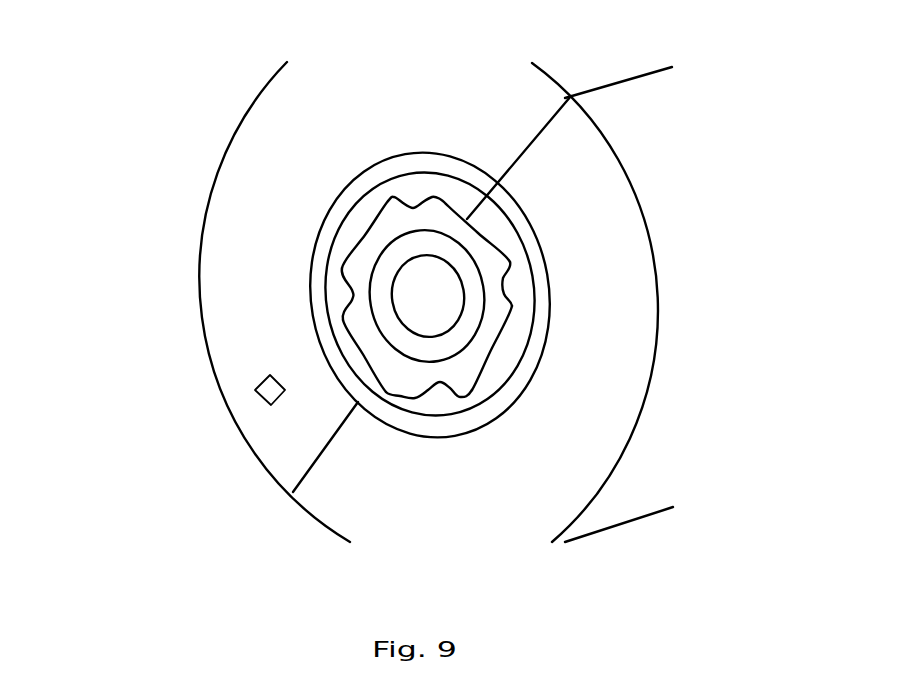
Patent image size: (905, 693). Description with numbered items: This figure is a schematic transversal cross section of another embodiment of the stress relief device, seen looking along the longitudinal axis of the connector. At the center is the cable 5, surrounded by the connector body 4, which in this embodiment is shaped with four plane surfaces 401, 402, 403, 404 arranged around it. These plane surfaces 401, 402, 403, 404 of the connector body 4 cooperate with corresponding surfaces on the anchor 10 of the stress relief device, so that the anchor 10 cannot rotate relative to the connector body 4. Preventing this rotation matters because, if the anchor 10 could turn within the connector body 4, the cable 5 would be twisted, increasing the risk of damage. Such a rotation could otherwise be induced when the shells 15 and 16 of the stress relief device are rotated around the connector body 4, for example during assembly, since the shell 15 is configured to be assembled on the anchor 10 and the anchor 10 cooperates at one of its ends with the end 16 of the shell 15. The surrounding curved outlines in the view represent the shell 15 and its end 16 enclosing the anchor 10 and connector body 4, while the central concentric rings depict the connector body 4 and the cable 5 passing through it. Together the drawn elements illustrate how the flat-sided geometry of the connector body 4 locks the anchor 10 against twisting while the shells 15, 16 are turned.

The connector body 4 is at (498, 327).
The cable 5 is at (448, 287).
The anchor 10 is at (355, 363).
The shell 15 is at (510, 107).
The end of the shell 16 is at (620, 342).
The plane surface 401 is at (485, 372).
The plane surface 402 is at (467, 220).
The plane surface 403 is at (380, 223).
The plane surface 404 is at (395, 375).